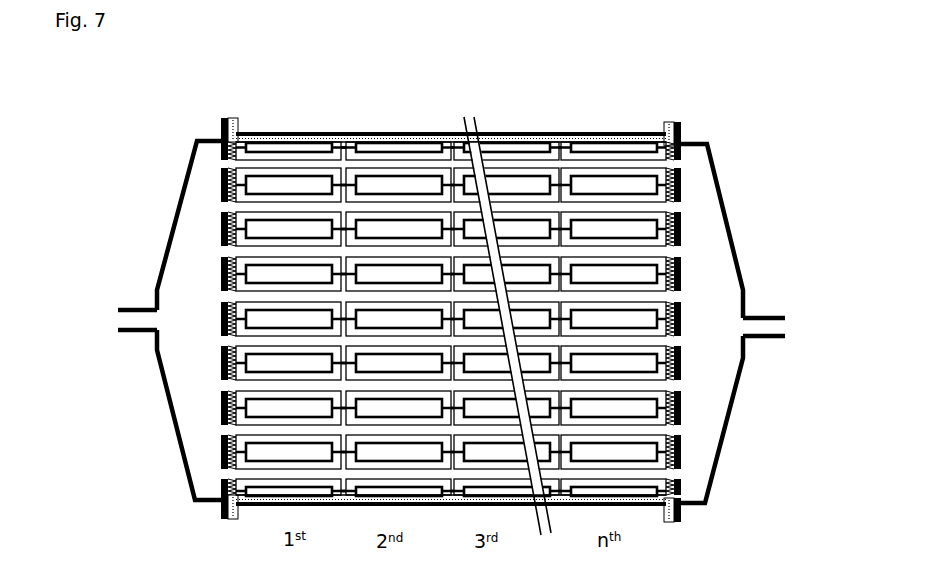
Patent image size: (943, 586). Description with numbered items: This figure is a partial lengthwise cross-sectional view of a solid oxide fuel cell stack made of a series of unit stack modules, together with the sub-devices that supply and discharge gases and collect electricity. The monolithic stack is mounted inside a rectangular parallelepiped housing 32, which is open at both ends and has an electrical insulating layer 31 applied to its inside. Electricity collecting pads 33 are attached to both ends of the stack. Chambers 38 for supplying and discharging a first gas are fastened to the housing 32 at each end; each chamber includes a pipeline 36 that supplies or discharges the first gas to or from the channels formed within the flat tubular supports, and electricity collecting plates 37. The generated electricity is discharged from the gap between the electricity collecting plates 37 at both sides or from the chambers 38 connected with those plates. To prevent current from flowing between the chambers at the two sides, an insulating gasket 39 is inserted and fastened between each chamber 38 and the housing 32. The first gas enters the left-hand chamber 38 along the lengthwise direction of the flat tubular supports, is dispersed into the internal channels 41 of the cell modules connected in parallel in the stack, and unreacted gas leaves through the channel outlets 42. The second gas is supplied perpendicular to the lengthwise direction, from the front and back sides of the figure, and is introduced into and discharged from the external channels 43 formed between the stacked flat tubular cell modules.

The electrical insulating layer 31 is at (272, 137).
The external rectangular housing 32 is at (405, 131).
The electricity collecting pads 33 is at (236, 214).
The pipeline for supplying and discharging a first gas 36 is at (118, 307).
The electricity collecting plates 37 is at (218, 226).
The chamber for supplying and discharging a first gas 38 is at (167, 246).
The insulating gasket 39 is at (231, 117).
The internal channels of gas inlet portions 41 is at (219, 430).
The internal channels of gas outlet portions 42 is at (683, 438).
The external channel for supplying and discharging a second gas 43 is at (385, 457).